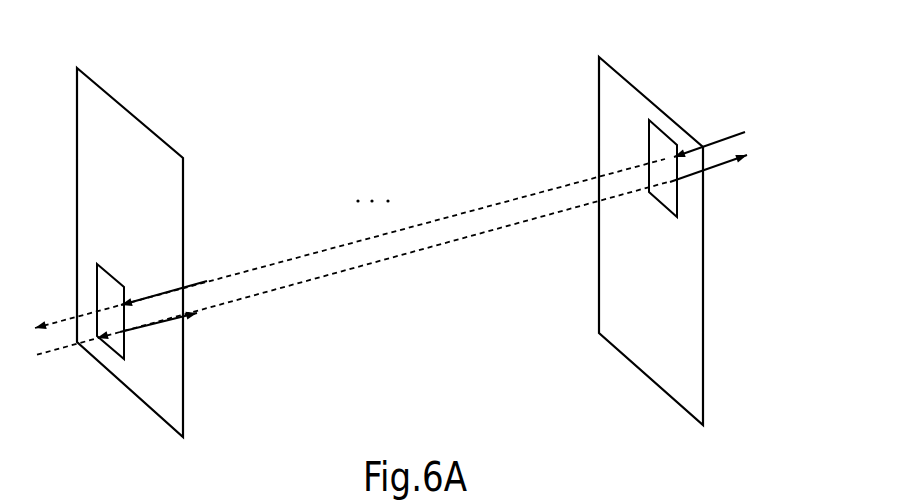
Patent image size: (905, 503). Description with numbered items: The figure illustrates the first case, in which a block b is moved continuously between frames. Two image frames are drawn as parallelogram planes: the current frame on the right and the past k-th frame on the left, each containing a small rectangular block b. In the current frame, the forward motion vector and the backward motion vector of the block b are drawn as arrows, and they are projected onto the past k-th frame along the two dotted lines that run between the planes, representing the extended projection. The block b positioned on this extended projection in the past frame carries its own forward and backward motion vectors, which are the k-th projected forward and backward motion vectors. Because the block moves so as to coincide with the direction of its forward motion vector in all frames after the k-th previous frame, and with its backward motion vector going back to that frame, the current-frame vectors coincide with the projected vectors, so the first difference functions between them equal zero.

The block b is at (118, 358).